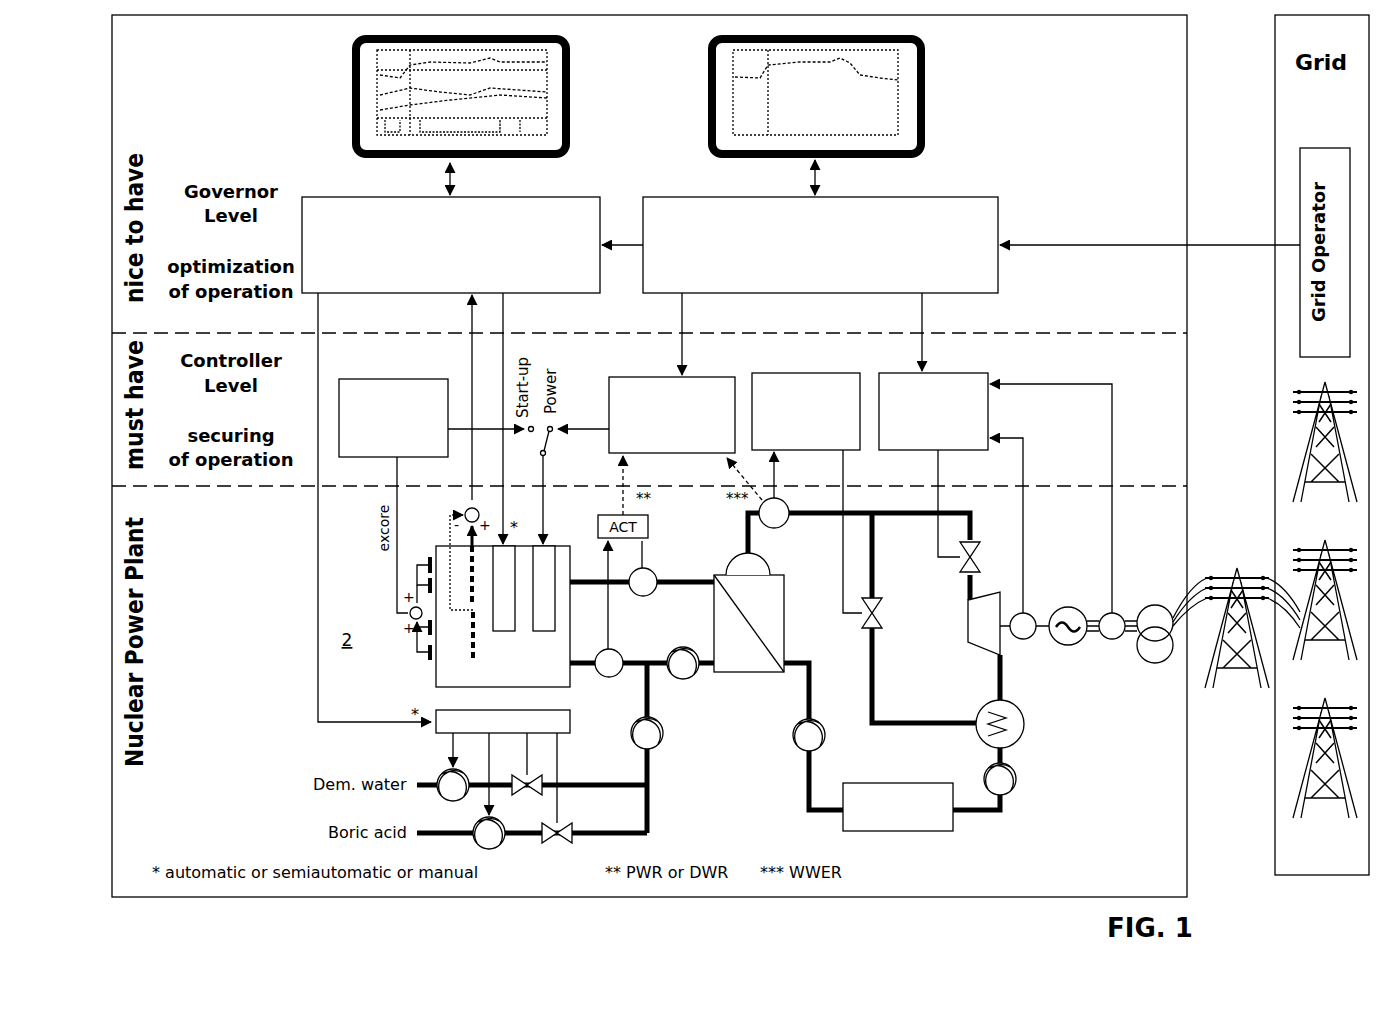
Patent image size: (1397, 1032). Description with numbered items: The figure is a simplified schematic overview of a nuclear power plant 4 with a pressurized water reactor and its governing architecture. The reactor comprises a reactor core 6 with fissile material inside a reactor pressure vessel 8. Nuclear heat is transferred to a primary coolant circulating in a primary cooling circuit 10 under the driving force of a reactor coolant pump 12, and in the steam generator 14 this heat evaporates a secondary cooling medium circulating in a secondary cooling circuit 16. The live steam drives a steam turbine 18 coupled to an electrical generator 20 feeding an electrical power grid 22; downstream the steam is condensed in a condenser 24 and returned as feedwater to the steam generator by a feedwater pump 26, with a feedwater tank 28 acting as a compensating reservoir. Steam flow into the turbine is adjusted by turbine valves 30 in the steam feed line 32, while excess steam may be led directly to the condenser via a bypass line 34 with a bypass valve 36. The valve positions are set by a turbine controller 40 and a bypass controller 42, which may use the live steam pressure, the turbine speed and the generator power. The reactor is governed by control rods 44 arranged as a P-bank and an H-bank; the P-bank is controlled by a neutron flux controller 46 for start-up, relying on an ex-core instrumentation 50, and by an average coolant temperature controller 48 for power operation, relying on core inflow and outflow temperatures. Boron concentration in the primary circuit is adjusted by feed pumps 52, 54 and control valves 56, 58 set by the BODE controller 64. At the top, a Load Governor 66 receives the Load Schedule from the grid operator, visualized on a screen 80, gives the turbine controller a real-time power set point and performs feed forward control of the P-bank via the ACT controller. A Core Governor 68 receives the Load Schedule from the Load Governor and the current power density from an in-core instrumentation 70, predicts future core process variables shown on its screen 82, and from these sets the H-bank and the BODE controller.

The nuclear power plant 4 is at (112, 628).
The reactor core 6 is at (558, 644).
The reactor pressure vessel 8 is at (570, 682).
The primary cooling circuit 10 is at (667, 580).
The reactor coolant pump 12 is at (677, 680).
The steam generator 14 is at (780, 634).
The secondary cooling circuit 16 is at (972, 540).
The steam turbine 18 is at (983, 598).
The electrical generator 20 is at (1068, 606).
The electrical power grid 22 is at (1370, 590).
The condenser 24 is at (1025, 745).
The feedwater pump 26 is at (794, 747).
The feedwater tank 28 is at (890, 783).
The turbine valves 30 is at (958, 562).
The steam feed line 32 is at (855, 513).
The bypass line 34 is at (870, 665).
The bypass valve 36 is at (880, 614).
The turbine controller 40 is at (980, 373).
The bypass controller 42 is at (780, 373).
The control rods 44 is at (528, 578).
The neutron flux controller 46 is at (360, 379).
The average coolant temperature controller 48 is at (615, 377).
The ex-core instrumentation 50 is at (425, 652).
The feed pump 52 is at (440, 770).
The feed pump 54 is at (505, 822).
The control valve 56 is at (522, 776).
The control valve 58 is at (565, 828).
The BODE controller 64 is at (572, 730).
The Load Governor 66 is at (970, 197).
The Core Governor 68 is at (325, 197).
The in-core instrumentation 70 is at (440, 662).
The screen 80 is at (925, 85).
The screen 82 is at (570, 90).